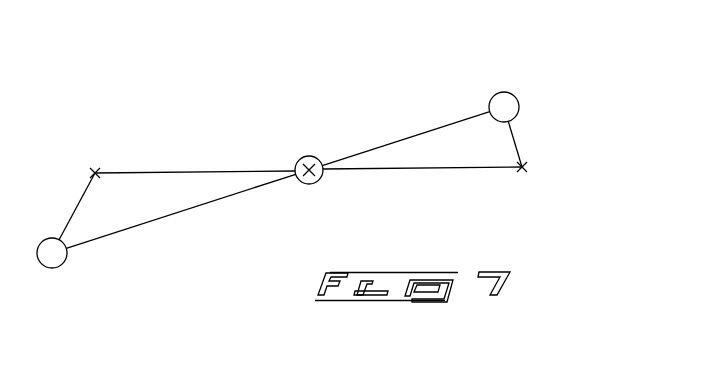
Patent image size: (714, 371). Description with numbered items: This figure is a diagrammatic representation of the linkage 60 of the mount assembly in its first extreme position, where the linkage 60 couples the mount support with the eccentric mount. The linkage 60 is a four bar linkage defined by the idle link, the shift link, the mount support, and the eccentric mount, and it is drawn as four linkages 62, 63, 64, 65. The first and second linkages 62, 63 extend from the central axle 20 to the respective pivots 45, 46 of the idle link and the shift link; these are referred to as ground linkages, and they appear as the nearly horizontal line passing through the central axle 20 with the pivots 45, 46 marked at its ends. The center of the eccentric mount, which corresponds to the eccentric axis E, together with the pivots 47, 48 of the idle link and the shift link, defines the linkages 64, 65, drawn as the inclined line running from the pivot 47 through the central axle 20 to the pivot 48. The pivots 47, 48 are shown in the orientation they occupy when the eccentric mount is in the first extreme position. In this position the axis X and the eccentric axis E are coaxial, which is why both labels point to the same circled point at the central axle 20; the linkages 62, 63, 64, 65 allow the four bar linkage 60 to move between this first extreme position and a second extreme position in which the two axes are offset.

The linkage 60 is at (233, 68).
The pivot 47 is at (52, 253).
The central axle 20 is at (299, 182).
The pivot 48 is at (518, 98).
The pivot 45 is at (96, 168).
The pivot 46 is at (528, 170).
The first linkage 62 is at (177, 173).
The second linkage 63 is at (432, 168).
The linkage 64 is at (155, 222).
The linkage 65 is at (469, 115).
The axis X— X is at (309, 156).
The eccentric axis E— E is at (315, 183).